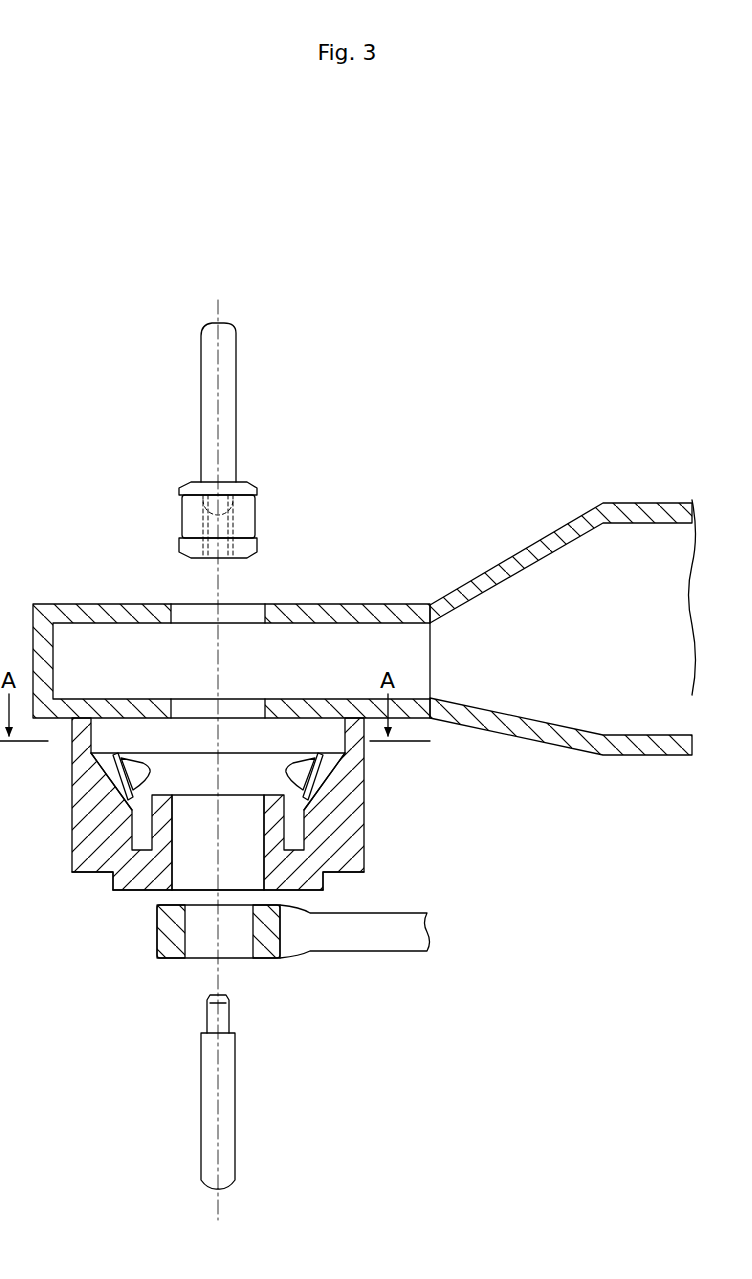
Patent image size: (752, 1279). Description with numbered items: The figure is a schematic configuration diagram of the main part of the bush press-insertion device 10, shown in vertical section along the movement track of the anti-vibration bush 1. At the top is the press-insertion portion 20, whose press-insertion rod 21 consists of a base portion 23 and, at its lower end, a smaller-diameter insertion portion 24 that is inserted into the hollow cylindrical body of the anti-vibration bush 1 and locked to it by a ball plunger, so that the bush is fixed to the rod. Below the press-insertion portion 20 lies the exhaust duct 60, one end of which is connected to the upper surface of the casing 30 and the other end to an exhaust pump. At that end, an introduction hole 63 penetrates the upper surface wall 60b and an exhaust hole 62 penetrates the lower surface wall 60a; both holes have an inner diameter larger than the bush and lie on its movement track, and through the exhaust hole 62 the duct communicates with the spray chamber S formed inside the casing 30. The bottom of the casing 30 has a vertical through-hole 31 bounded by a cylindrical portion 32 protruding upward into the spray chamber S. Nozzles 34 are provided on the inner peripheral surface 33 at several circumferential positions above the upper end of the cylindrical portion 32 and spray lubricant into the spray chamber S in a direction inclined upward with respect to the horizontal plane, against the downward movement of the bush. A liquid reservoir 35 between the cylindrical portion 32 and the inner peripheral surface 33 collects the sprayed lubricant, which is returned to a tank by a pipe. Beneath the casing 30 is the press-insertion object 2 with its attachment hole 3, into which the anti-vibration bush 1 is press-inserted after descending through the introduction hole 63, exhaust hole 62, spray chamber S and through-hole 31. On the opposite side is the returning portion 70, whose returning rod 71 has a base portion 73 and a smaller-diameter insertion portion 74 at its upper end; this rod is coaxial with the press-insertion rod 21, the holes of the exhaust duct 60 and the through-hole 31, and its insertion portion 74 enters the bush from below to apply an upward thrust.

The bush press-insertion device 10 is at (214, 249).
The press-insertion portion 20 is at (239, 440).
The press-insertion rod 21 is at (283, 440).
The base portion 23 is at (232, 415).
The insertion portion 24 is at (233, 511).
The anti-vibration bush 1 is at (184, 510).
The exhaust duct 60 is at (364, 627).
The lower surface wall 60a is at (332, 703).
The upper surface wall 60b is at (375, 612).
The introduction hole 63 is at (172, 612).
The exhaust hole 62 is at (172, 710).
The spray chamber S is at (272, 772).
The casing 30 is at (225, 798).
The nozzle 34 is at (122, 770).
The inner peripheral surface 33 is at (130, 820).
The cylindrical portion 32 is at (290, 832).
The liquid reservoir 35 is at (116, 876).
The through-hole 31 is at (172, 862).
The attachment hole 3 is at (247, 940).
The press-insertion object 2 is at (398, 942).
The returning portion 70 is at (214, 1092).
The returning rod 71 is at (167, 1092).
The base portion 73 is at (208, 1079).
The insertion portion 74 is at (208, 1013).